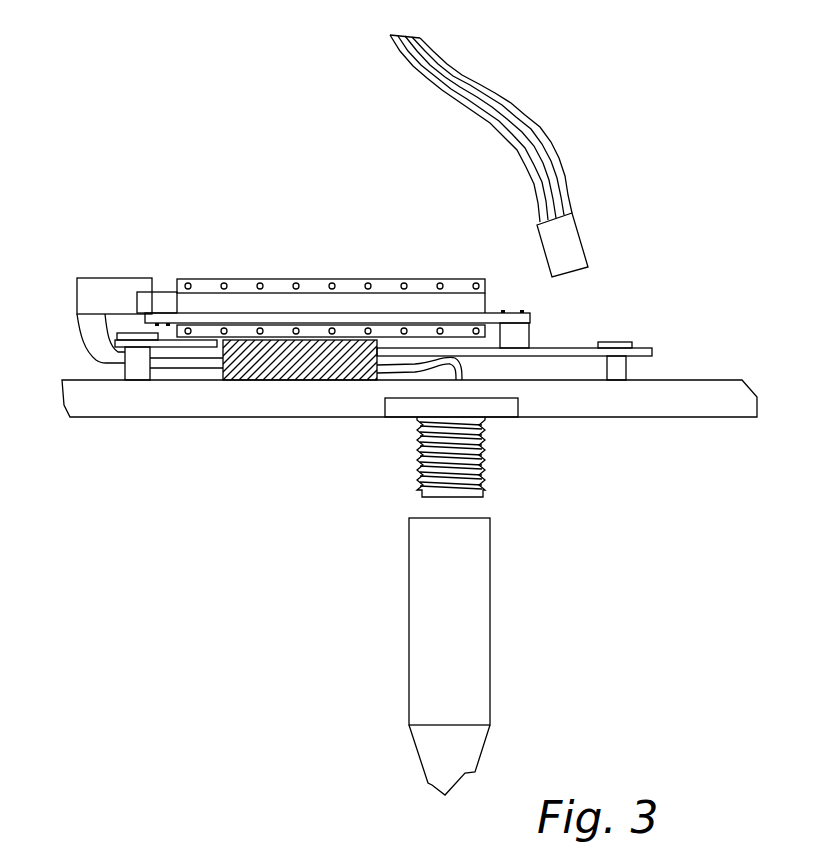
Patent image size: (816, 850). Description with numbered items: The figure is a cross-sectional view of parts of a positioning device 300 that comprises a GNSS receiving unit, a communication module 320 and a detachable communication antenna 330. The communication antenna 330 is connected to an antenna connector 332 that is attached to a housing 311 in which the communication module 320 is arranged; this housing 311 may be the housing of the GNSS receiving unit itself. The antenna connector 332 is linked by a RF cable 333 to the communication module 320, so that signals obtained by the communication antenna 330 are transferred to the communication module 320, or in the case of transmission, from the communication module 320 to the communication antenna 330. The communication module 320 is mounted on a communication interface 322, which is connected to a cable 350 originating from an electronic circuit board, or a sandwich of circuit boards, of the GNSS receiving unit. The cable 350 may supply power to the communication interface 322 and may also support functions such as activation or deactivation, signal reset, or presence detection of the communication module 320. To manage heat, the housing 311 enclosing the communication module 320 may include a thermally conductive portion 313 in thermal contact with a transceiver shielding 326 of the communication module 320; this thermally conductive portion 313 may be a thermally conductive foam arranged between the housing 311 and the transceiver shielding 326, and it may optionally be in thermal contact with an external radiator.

The positioning device 300 is at (177, 142).
The housing 311 is at (717, 403).
The thermally conductive portion 313 is at (295, 363).
The communication module 320 is at (215, 300).
The communication interface 322 is at (584, 306).
The transceiver shielding 326 is at (197, 333).
The communication antenna 330 is at (472, 630).
The antenna connector 332 is at (485, 448).
The RF cable 333 is at (108, 363).
The cable 350 is at (562, 173).